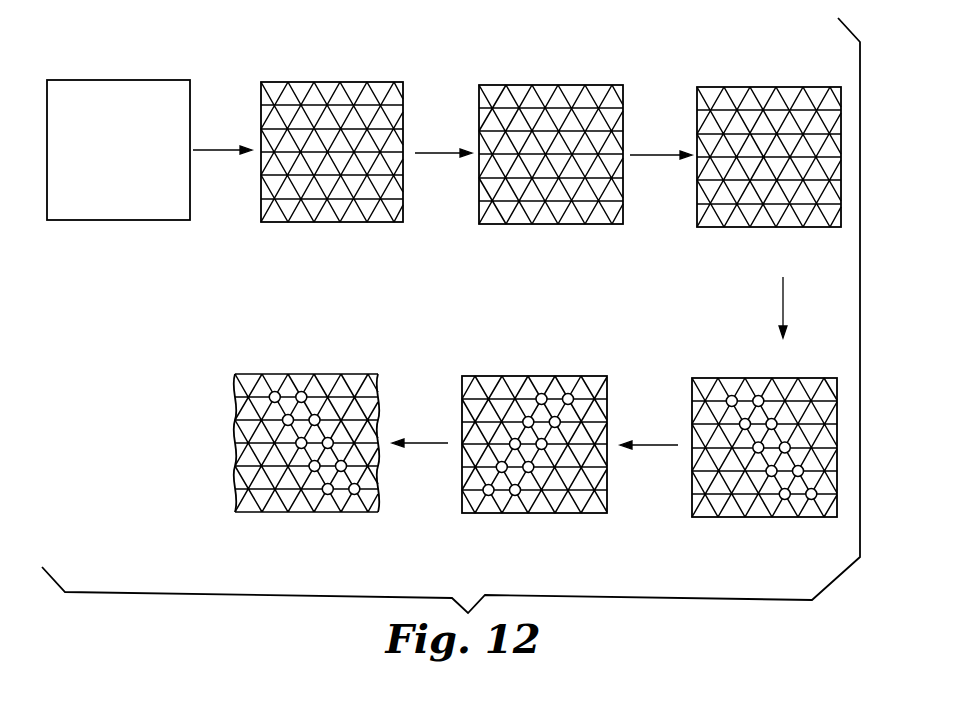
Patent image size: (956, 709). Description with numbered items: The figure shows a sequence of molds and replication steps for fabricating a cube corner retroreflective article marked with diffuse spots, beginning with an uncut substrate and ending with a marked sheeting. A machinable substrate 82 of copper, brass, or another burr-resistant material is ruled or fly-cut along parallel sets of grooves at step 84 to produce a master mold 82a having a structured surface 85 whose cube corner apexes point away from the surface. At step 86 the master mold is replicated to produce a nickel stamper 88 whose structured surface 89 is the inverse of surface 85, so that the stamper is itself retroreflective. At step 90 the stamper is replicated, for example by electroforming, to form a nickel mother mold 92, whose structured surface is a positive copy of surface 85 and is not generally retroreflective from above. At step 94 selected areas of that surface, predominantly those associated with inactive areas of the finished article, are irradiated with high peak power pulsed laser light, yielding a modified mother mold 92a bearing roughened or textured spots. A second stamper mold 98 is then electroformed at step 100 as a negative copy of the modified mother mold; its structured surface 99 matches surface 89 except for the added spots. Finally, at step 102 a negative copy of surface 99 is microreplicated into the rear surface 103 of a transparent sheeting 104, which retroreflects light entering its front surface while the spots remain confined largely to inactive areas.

The machinable substrate 82 is at (98, 85).
The master mold 82a is at (332, 150).
The ruling or fly-cutting step 84 is at (215, 148).
The structured surface 85 is at (325, 215).
The replication step 86 is at (433, 148).
The stamper 88 is at (551, 151).
The structured surface 89 is at (545, 220).
The replication step 90 is at (648, 153).
The mother mold 92 is at (769, 153).
The laser irradiation step 94 is at (783, 302).
The modified mother mold 92a is at (764, 446).
The second stamper mold 98 is at (534, 442).
The structured surface 99 is at (563, 508).
The electroforming step 100 is at (655, 443).
The microreplication step 102 is at (425, 442).
The rear surface 103 is at (275, 508).
The transparent sheeting 104 is at (307, 439).